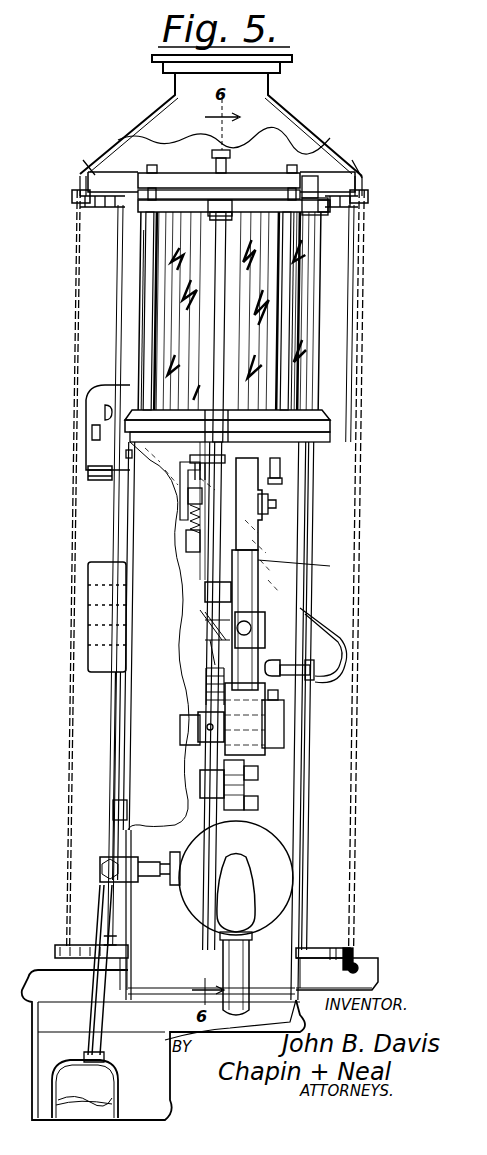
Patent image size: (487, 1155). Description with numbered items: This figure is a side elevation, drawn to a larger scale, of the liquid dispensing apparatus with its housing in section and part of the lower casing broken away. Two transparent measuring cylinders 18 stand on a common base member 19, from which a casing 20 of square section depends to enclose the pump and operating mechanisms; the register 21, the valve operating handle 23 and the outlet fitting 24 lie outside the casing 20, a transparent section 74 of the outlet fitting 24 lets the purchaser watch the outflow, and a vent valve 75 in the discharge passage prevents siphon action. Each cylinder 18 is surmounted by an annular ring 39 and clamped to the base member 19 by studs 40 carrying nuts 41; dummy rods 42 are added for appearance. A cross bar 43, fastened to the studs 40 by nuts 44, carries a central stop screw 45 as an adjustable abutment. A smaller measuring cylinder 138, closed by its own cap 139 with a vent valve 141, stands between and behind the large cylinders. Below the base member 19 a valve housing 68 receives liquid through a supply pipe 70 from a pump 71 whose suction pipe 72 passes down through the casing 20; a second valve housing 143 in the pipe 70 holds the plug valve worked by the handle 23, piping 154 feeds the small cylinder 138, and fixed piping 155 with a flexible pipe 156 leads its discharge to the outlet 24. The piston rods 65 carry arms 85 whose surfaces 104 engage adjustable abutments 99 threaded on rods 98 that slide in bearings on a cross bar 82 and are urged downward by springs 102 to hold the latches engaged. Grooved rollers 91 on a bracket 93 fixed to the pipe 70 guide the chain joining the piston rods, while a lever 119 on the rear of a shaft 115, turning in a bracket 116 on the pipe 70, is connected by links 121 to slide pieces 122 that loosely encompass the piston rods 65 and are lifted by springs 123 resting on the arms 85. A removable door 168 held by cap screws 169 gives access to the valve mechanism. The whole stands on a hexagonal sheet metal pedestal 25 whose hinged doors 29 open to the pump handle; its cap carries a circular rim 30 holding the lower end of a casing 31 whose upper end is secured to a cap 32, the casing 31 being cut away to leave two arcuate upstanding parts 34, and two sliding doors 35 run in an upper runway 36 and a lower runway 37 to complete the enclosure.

The measuring cylinder 18 is at (176, 240).
The base member 19 is at (322, 418).
The casing 20 is at (310, 902).
The register 21 is at (108, 616).
The valve operating handle 23 is at (113, 810).
The outlet fitting 24 is at (88, 476).
The pedestal 25 is at (120, 1072).
The doors 29 is at (36, 1035).
The circular rim 30 is at (352, 942).
The casing 31 is at (88, 184).
The cap 32 is at (152, 116).
The upstanding parts 34 is at (110, 752).
The doors 35 is at (70, 696).
The upper circular runway 36 is at (74, 198).
The lower circular runway 37 is at (358, 962).
The annular ring 39 is at (146, 203).
The studs 40 is at (150, 266).
The nut 41 is at (100, 172).
The dummy rods 42 is at (225, 318).
The cross bar 43 is at (180, 176).
The nuts 44 is at (152, 188).
The stop screw 45 is at (228, 165).
The piston rod 65 is at (222, 870).
The valve housing 68 is at (254, 525).
The supply pipe 70 is at (258, 592).
The pump 71 is at (275, 872).
The suction pipe 72 is at (250, 974).
The transparent section 74 is at (86, 428).
The vent valve 75 is at (142, 352).
The cross bar 82 is at (182, 482).
The arm 85 is at (198, 734).
The grooved rollers 91 is at (210, 760).
The bracket 93 is at (200, 790).
The rod 98 is at (190, 525).
The adjustable abutment 99 is at (190, 550).
The spring 102 is at (190, 504).
The surface 104 is at (180, 718).
The shaft 115 is at (205, 592).
The bracket 116 is at (262, 640).
The lever 119 is at (210, 645).
The link 121 is at (258, 600).
The slide piece 122 is at (210, 600).
The spring 123 is at (206, 690).
The additional measuring cylinder 138 is at (300, 352).
The cap 139 is at (326, 208).
The vent valve 141 is at (315, 190).
The valve housing 143 is at (275, 738).
The piping 154 is at (284, 470).
The fixed piping 155 is at (300, 682).
The flexible pipe 156 is at (330, 626).
The removable door 168 is at (130, 508).
The cap screws 169 is at (124, 454).